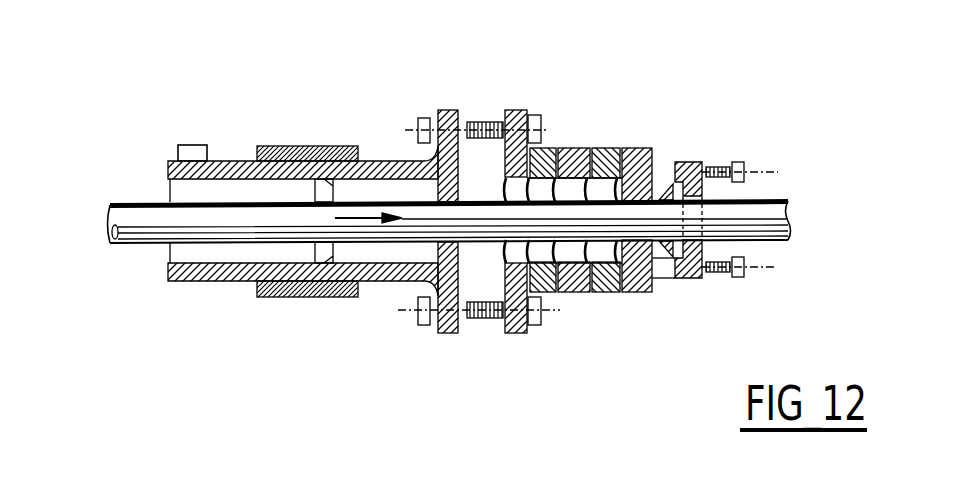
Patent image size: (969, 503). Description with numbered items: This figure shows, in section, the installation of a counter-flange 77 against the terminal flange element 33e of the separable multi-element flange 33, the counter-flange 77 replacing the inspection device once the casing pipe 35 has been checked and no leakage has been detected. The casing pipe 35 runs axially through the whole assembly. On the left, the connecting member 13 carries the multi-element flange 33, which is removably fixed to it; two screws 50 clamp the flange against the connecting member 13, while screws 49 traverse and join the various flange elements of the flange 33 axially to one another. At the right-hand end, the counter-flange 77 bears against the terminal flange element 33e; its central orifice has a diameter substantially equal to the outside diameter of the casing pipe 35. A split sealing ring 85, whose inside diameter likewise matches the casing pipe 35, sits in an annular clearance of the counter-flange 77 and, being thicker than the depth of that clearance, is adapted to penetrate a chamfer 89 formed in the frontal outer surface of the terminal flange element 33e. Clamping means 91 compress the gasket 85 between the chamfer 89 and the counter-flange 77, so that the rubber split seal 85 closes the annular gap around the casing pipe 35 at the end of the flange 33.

The connecting member 13 is at (391, 154).
The screws 50 is at (490, 120).
The separable multi-element flange 33 is at (606, 142).
The terminal flange element 33e is at (638, 148).
The chamfer 89 is at (664, 186).
The counter-flange 77 is at (703, 162).
The clamping means 91 is at (750, 170).
The screws 49 is at (657, 283).
The split sealing ring 85 is at (662, 262).
The casing pipe 35 is at (772, 210).